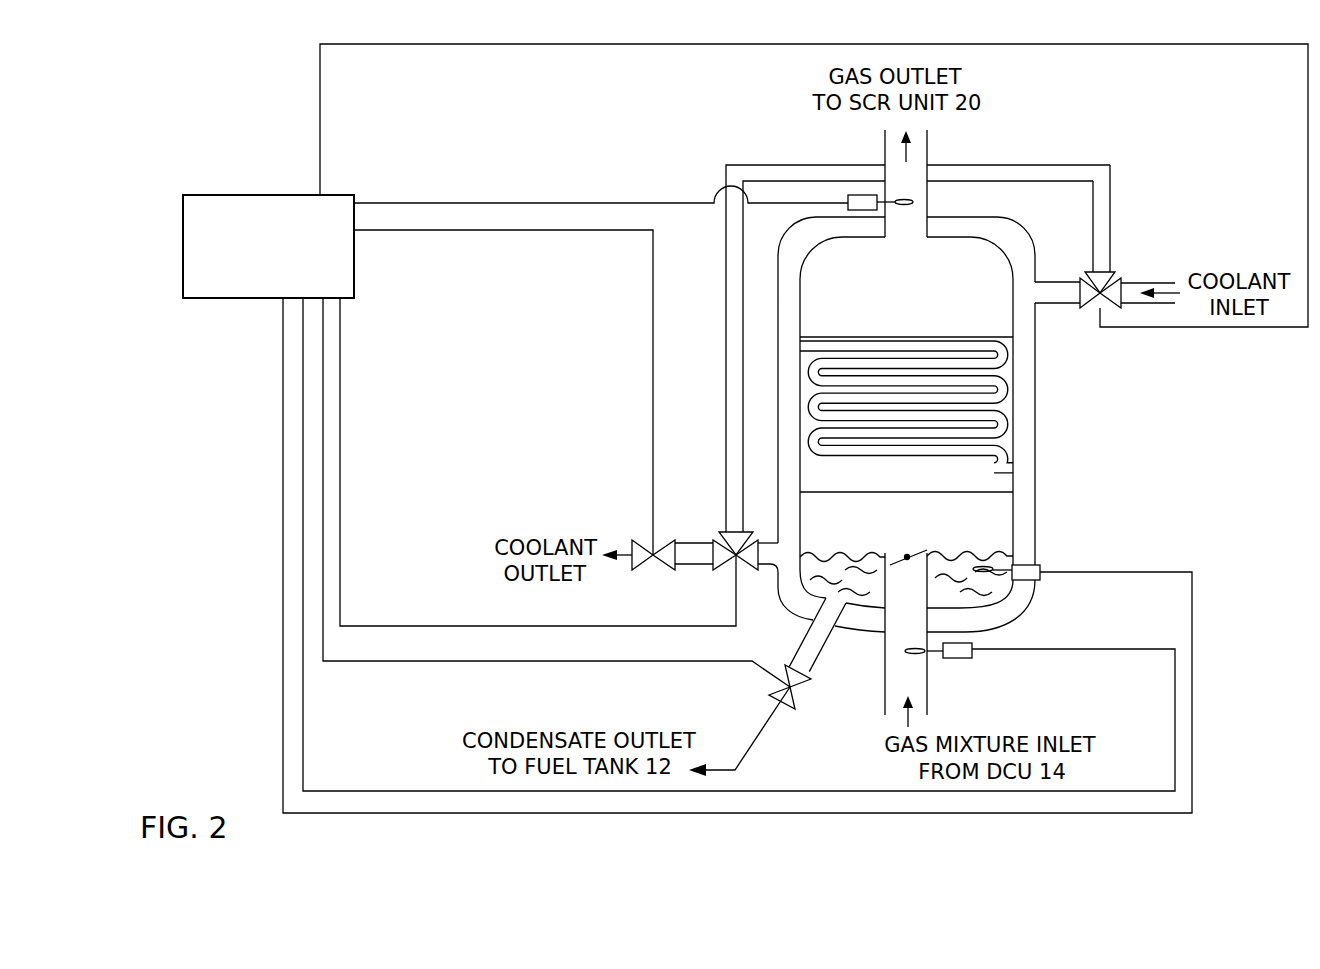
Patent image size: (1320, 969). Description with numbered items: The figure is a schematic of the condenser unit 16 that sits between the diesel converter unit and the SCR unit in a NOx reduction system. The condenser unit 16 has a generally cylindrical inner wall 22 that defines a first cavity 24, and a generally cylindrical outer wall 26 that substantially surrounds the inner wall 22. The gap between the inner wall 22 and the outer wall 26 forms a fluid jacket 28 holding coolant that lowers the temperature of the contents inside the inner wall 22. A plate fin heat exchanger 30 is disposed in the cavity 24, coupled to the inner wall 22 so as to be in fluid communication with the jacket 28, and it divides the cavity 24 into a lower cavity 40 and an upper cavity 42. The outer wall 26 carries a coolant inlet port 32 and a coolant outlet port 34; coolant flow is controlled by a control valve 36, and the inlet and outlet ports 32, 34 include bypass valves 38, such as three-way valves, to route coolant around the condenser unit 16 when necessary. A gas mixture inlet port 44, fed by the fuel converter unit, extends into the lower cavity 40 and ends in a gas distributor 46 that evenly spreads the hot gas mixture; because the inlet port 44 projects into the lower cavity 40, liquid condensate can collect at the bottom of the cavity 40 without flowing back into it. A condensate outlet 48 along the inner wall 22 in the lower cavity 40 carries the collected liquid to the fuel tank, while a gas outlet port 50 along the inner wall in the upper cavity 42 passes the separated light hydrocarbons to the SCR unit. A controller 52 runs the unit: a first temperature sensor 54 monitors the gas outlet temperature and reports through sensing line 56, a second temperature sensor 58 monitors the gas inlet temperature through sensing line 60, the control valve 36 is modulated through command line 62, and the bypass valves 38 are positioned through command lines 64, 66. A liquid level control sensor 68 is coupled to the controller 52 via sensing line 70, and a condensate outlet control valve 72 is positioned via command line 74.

The condenser unit 16 is at (670, 148).
The inner wall 22 is at (800, 283).
The first cavity 24 is at (906, 247).
The outer wall 26 is at (778, 415).
The fluid jacket 28 is at (1035, 368).
The plate fin heat exchanger 30 is at (1013, 400).
The coolant inlet port 32 is at (1050, 282).
The coolant outlet port 34 is at (768, 575).
The control valve 36 is at (638, 572).
The bypass valves 38 is at (1115, 275).
The lower cavity 40 is at (906, 556).
The upper cavity 42 is at (906, 396).
The gas mixture inlet port 44 is at (927, 693).
The gas distributor 46 is at (907, 555).
The condensate outlet 48 is at (825, 655).
The gas outlet port 50 is at (927, 143).
The controller 52 is at (262, 195).
The first temperature sensor 54 is at (840, 205).
The sensing line 56 is at (392, 203).
The second temperature sensor 58 is at (962, 658).
The sensing line 60 is at (1035, 649).
The command line 62 is at (398, 230).
The command line 64 is at (320, 138).
The command line 66 is at (340, 325).
The liquid level control sensor 68 is at (1040, 566).
The sensing line 70 is at (1125, 572).
The condensate outlet control valve 72 is at (797, 706).
The command line 74 is at (645, 661).